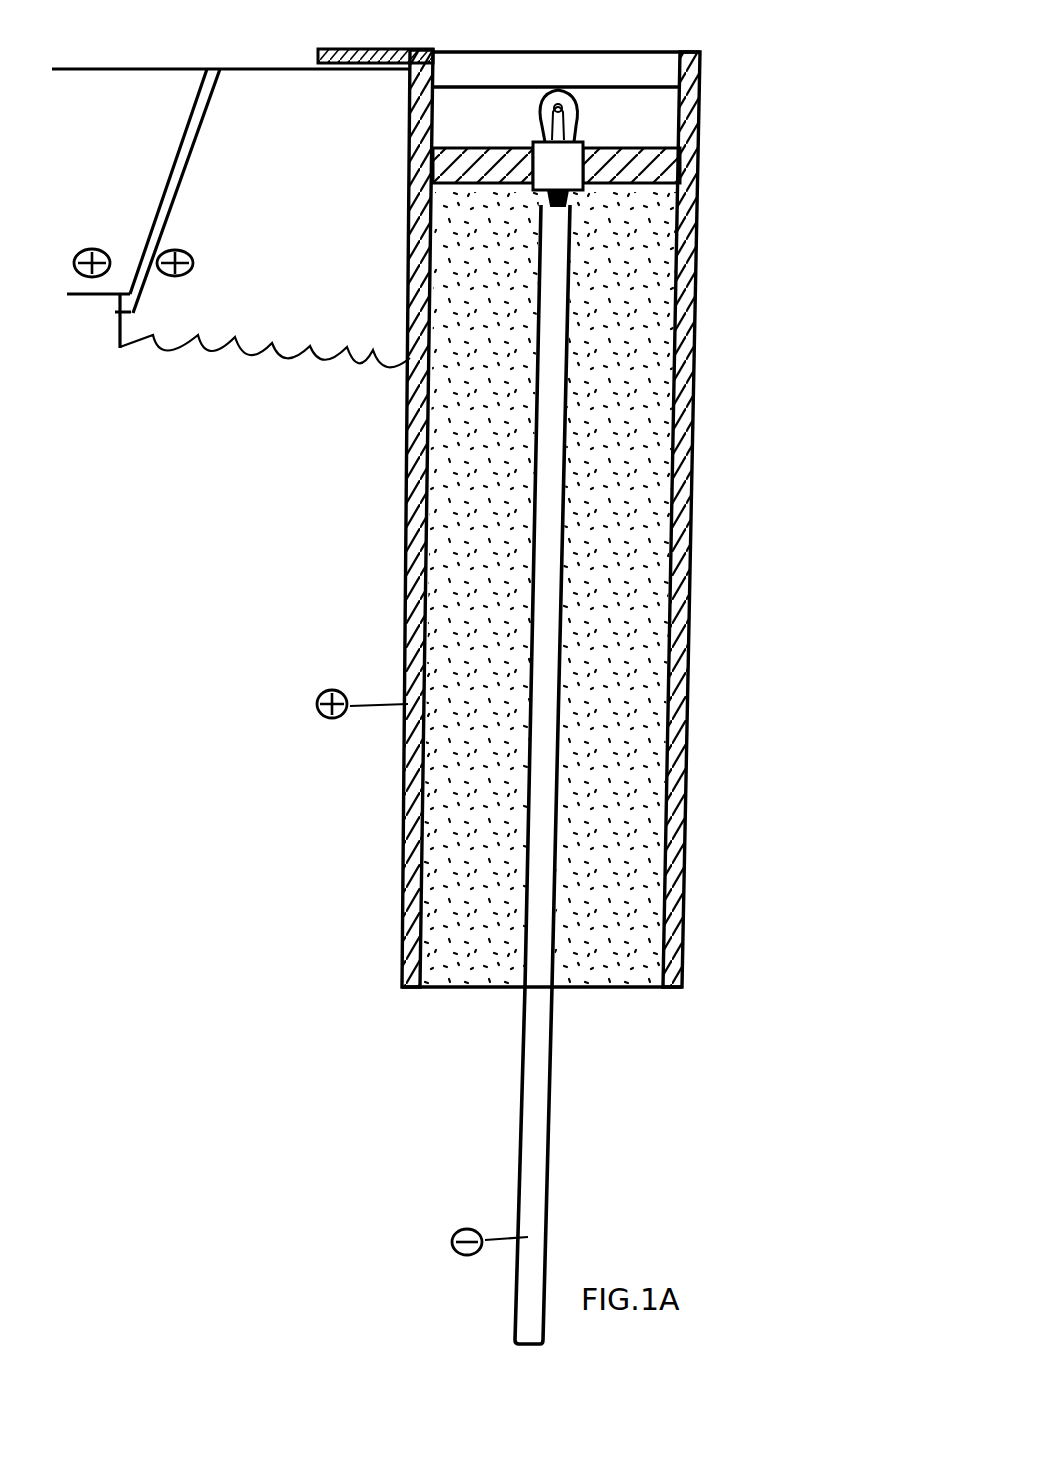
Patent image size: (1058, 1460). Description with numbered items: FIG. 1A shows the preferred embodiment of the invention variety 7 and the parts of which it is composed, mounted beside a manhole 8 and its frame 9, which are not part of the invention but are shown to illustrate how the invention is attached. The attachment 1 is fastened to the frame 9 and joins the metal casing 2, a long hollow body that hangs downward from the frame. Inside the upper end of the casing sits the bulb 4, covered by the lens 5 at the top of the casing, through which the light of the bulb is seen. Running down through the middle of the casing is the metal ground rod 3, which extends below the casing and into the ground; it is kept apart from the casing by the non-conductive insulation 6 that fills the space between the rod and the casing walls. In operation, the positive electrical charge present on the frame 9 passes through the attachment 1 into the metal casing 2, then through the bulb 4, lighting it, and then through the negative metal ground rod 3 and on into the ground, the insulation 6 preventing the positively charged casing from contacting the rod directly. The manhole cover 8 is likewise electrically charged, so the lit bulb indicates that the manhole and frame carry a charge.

The attachments 1 is at (376, 51).
The metal casing 2 is at (408, 516).
The metal ground rod 3 is at (526, 1135).
The bulb 4 is at (587, 118).
The lens 5 is at (643, 60).
The insulation 6 is at (648, 367).
The invention variety 7 is at (740, 482).
The manhole 8 is at (144, 81).
The frame 9 is at (287, 84).